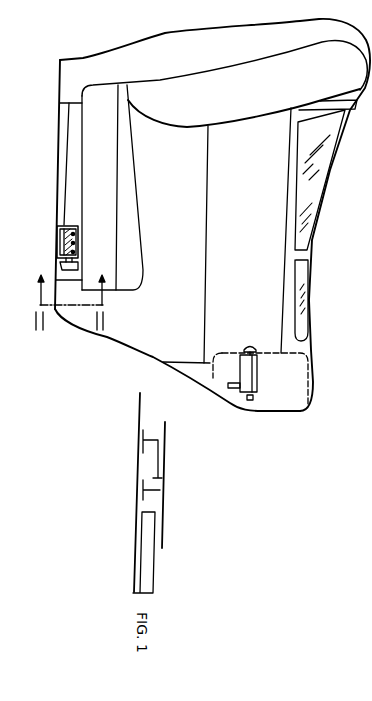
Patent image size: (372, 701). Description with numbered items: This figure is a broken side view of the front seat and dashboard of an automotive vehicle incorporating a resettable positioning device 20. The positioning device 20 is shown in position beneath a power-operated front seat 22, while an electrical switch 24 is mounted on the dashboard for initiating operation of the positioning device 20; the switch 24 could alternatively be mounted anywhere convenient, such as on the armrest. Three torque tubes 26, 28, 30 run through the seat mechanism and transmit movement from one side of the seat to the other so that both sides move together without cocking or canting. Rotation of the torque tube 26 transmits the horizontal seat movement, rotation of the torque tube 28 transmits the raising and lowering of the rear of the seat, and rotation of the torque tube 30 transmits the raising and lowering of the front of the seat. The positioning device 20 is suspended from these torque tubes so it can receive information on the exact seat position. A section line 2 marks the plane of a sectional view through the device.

The section line 2- 2 is at (72, 302).
The resettable positioning device 20 is at (56, 238).
The power-operated front seat 22 is at (134, 157).
The electrical switch 24 is at (263, 398).
The torque tube 26 is at (77, 230).
The torque tube 28 is at (74, 242).
The torque tube 30 is at (73, 256).